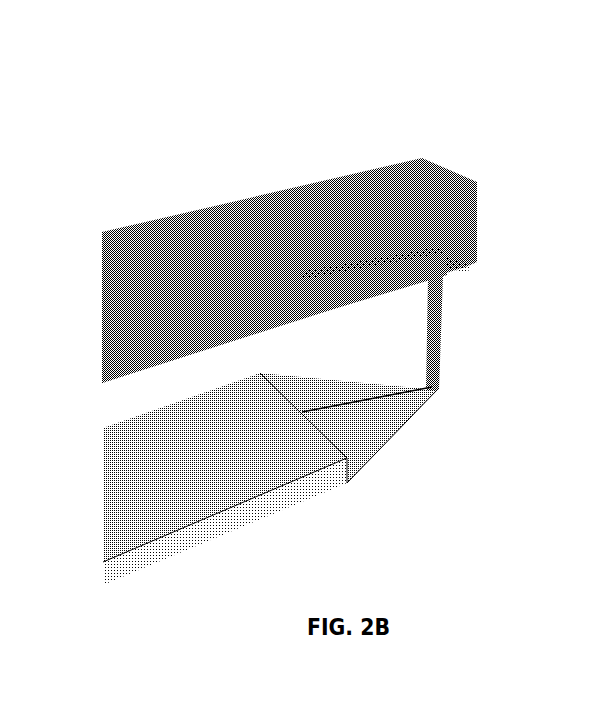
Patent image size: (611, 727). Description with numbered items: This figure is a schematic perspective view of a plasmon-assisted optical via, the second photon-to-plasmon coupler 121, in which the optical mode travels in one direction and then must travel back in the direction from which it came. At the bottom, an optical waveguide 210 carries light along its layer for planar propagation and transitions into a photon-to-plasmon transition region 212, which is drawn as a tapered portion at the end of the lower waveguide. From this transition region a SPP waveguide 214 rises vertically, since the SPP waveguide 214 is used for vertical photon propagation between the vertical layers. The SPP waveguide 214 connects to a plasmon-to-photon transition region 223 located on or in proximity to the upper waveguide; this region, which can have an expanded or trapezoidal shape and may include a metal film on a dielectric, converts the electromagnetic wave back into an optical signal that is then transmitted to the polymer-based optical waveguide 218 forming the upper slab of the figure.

The photon-to-plasmon coupler 121 is at (261, 65).
The polymer-based optical waveguide 218 is at (306, 176).
The plasmon-to-photon transition region 223 is at (407, 323).
The SPP waveguide 214 is at (478, 337).
The optical waveguide 210 is at (333, 550).
The photon-to-plasmon transition region 212 is at (405, 437).